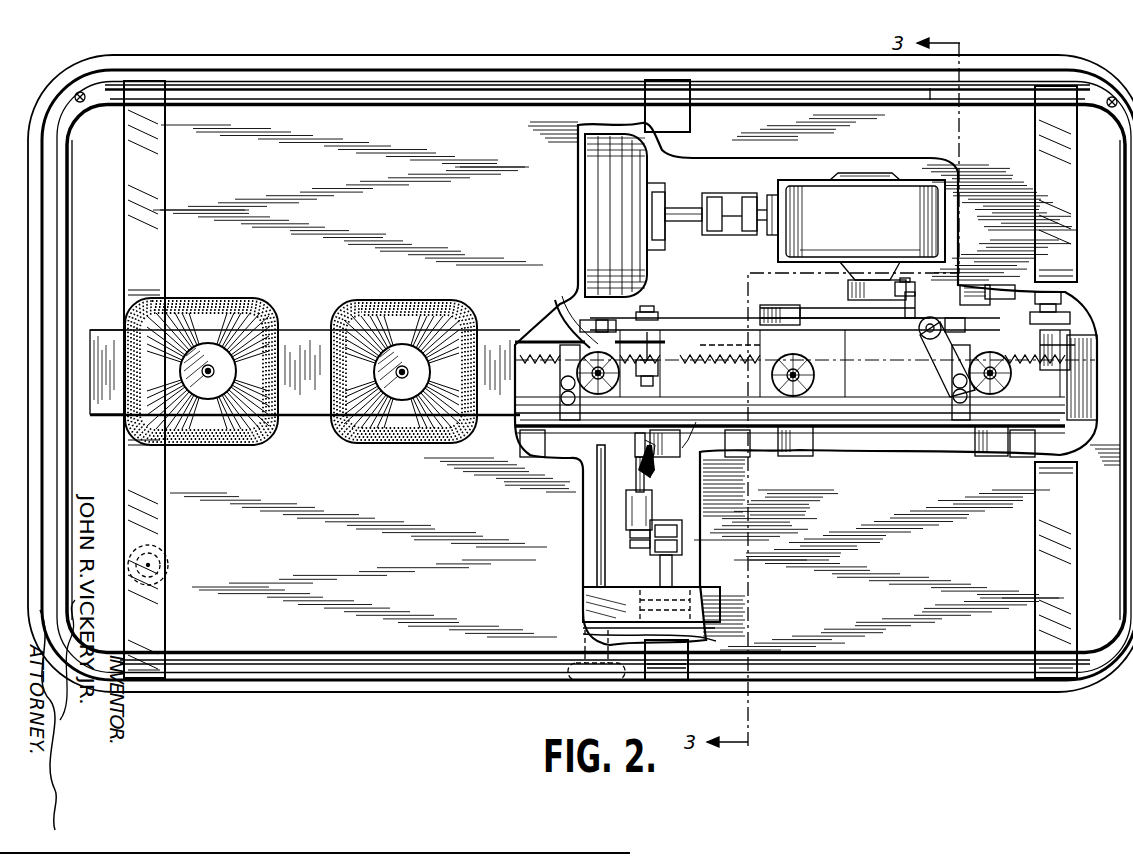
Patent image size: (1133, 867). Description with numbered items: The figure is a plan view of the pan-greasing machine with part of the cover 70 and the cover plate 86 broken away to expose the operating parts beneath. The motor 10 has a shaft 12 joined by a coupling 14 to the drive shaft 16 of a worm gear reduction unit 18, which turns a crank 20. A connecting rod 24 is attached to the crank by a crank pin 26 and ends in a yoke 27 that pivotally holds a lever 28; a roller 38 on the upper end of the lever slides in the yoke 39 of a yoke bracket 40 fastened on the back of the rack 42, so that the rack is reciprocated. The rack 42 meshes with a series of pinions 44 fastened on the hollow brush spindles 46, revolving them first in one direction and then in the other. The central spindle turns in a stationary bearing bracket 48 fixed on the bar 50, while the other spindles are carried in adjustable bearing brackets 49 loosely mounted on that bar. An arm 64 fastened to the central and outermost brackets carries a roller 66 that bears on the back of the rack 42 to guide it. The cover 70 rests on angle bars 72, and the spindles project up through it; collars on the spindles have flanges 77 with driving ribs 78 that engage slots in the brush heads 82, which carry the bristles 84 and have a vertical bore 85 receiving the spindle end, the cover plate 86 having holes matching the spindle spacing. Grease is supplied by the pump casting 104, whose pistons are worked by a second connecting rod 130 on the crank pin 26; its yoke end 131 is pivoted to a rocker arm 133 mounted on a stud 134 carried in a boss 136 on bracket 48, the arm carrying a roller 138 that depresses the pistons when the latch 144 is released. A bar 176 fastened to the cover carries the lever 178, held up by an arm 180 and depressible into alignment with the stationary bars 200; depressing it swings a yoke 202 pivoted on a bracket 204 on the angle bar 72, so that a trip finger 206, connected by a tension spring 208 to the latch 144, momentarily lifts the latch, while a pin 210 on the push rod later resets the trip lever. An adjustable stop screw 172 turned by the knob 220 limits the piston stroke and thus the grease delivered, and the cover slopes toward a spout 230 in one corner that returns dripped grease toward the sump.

The motor 10 is at (640, 166).
The shaft 12 is at (690, 210).
The coupling 14 is at (728, 206).
The drive shaft 16 is at (766, 206).
The worm gear reduction unit 18 is at (868, 205).
The crank 20 is at (848, 288).
The connecting rod 24 is at (952, 318).
The crank pin 26 is at (912, 288).
The yoke 27 is at (1012, 292).
The lever 28 is at (988, 285).
The roller 38 is at (1068, 320).
The yoke 39 is at (1055, 350).
The yoke bracket 40 is at (1078, 338).
The rack 42 is at (704, 352).
The pinions 44 is at (618, 390).
The hollow brush spindles 46 is at (210, 372).
The stationary bearing bracket 48 is at (595, 425).
The adjustable bearing brackets 49 is at (796, 448).
The bar 50 is at (880, 424).
The arm 64 is at (520, 352).
The roller 66 is at (930, 318).
The cover 70 is at (540, 58).
The angle bars 72 is at (612, 600).
The circumferential flanges 77 is at (560, 432).
The driving lugs or ribs 78 is at (603, 322).
The brush heads 82 is at (190, 430).
The bristles 84 is at (185, 350).
The vertical bore 85 is at (210, 368).
The cover plate 86 is at (99, 330).
The pump casting 104 is at (684, 456).
The connecting rod 130 is at (848, 330).
The yoke end 131 is at (798, 318).
The rocker arm 133 is at (680, 324).
The stud 134 is at (650, 310).
The boss 136 is at (660, 372).
The roller 138 is at (580, 320).
The latch 144 is at (655, 458).
The adjustable stop screw 172 is at (596, 524).
The bar 176 is at (927, 104).
The lever 178 is at (690, 120).
The arm 180 is at (682, 524).
The stationary bars 200 is at (136, 517).
The yoke 202 is at (672, 572).
The bracket 204 is at (698, 626).
The trip finger 206 is at (652, 500).
The tension spring 208 is at (638, 458).
The pin 210 is at (636, 452).
The knob 220 is at (565, 668).
The spout 230 is at (170, 574).